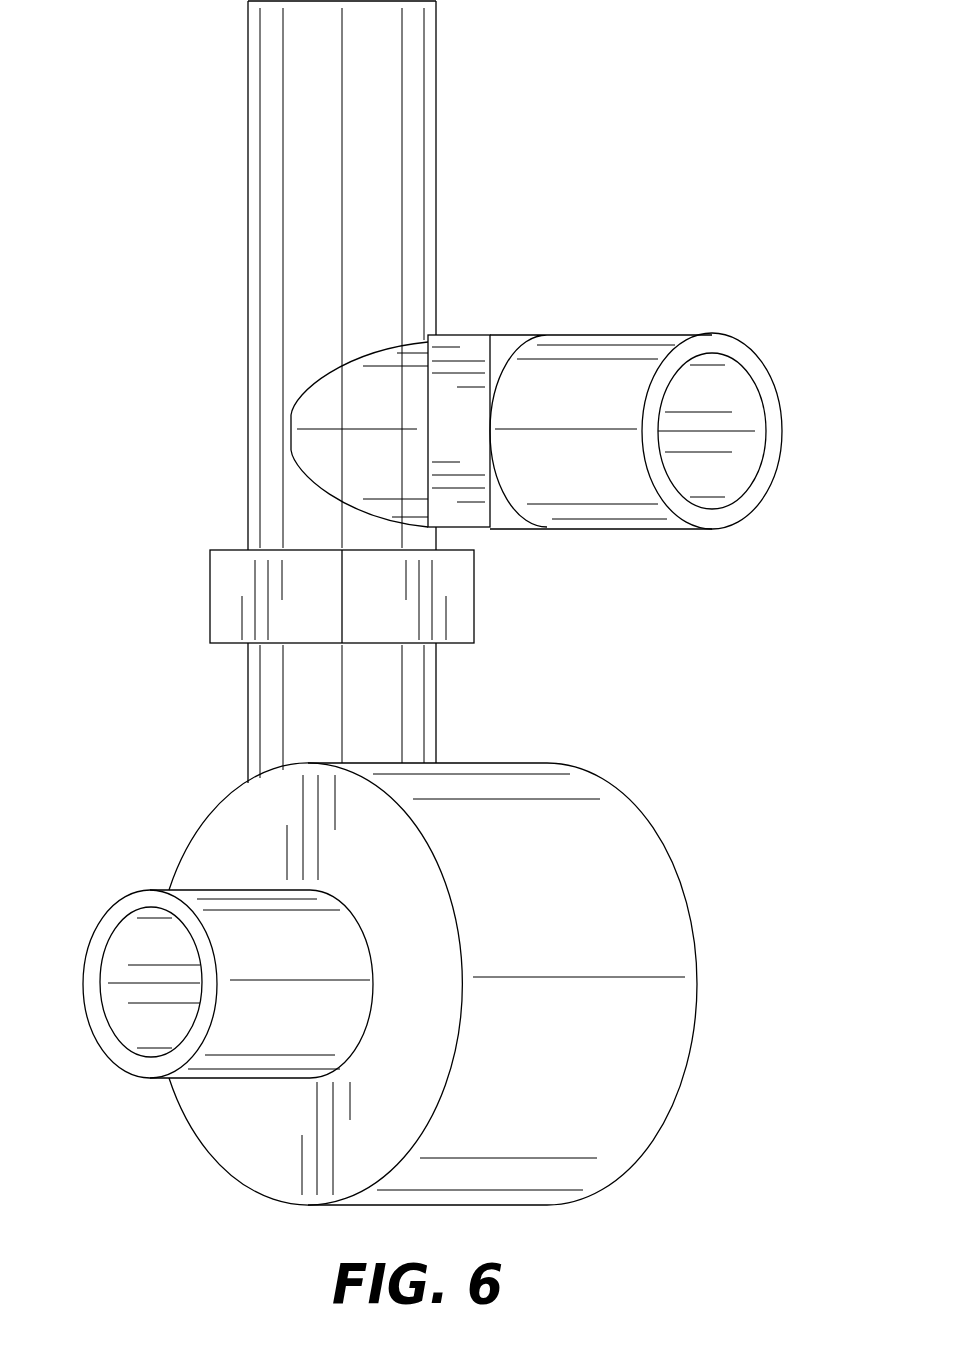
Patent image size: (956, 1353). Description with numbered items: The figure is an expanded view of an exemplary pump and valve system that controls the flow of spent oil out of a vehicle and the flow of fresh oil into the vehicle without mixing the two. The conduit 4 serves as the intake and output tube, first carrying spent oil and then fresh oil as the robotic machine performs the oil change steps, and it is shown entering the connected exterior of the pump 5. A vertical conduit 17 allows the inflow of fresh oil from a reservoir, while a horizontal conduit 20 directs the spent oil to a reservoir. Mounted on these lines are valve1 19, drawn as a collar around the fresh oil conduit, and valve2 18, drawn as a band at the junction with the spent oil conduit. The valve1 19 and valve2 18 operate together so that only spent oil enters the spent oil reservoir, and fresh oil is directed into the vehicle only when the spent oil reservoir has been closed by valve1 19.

The conduit 4 is at (125, 1023).
The pump 5 is at (632, 840).
The conduit 17 is at (268, 135).
The valve2 18 is at (471, 343).
The valve1 19 is at (218, 573).
The conduit 20 is at (740, 378).